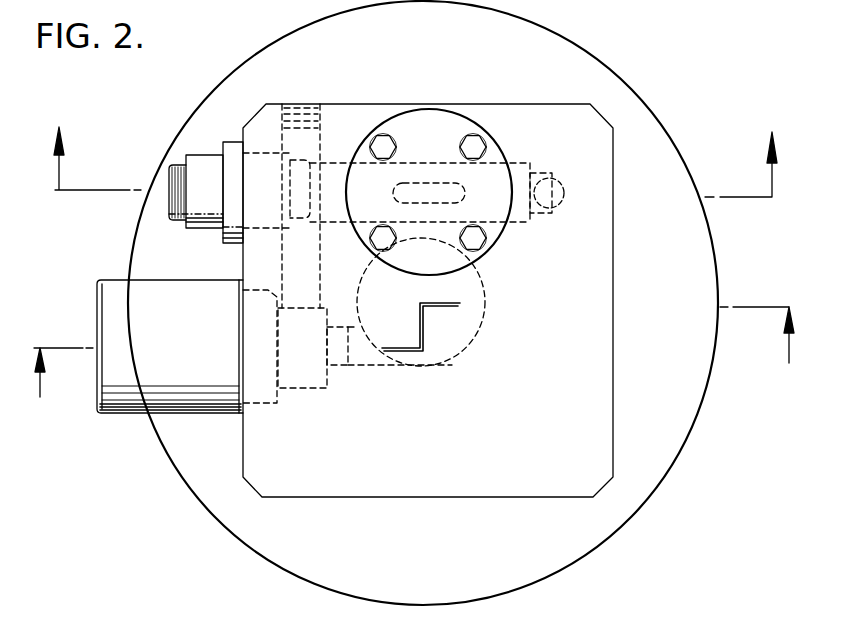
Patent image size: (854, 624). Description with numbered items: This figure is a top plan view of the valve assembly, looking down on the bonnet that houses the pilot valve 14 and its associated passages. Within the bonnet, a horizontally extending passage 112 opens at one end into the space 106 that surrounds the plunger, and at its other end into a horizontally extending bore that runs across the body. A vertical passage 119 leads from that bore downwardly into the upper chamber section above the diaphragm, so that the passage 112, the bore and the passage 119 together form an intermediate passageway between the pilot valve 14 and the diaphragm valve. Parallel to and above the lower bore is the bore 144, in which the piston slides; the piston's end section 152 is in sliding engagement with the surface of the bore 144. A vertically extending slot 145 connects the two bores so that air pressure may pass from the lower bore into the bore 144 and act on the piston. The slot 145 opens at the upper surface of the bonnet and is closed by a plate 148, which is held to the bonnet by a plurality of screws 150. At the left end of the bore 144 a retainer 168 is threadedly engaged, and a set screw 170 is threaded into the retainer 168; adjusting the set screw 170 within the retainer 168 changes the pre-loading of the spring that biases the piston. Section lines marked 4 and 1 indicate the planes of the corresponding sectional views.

The pilot valve 14 is at (137, 419).
The space 106 is at (297, 390).
The horizontally extending passage 112 is at (282, 258).
The vertical passage 119 is at (560, 208).
The bore 144 is at (523, 166).
The vertically extending slot 145 is at (418, 186).
The plate 148 is at (497, 247).
The screws 150 is at (377, 139).
The end section 152 is at (452, 362).
The retainer 168 is at (203, 153).
The set screw 170 is at (172, 182).
The section line 4- 4 is at (417, 161).
The section line 1- 1 is at (799, 362).